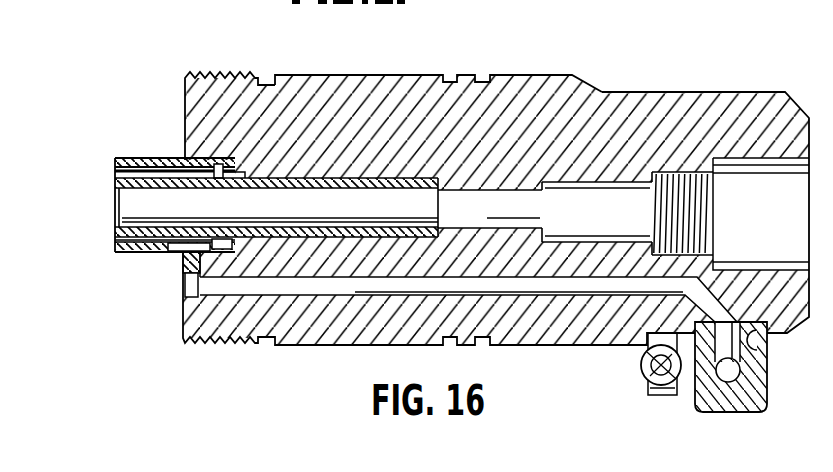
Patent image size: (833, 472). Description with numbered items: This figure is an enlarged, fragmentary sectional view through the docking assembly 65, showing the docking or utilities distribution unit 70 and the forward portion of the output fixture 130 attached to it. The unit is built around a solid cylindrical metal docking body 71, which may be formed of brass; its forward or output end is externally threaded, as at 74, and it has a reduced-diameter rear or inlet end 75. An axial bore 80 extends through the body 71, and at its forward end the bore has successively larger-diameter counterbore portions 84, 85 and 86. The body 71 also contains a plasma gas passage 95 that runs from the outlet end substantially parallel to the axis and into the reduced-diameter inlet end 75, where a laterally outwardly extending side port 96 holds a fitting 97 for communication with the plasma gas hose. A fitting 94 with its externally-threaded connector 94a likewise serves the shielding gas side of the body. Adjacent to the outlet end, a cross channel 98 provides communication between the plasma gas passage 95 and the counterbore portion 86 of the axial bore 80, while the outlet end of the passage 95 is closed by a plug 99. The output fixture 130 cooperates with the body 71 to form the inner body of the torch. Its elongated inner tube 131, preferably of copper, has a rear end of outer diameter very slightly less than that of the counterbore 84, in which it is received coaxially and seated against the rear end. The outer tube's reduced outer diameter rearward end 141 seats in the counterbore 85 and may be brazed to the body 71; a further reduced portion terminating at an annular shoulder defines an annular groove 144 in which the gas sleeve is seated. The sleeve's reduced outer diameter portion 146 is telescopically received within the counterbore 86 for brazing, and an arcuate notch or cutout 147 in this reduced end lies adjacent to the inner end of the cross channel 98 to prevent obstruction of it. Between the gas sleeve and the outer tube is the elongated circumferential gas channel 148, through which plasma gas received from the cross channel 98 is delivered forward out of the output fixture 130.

The docking assembly 65 is at (218, 391).
The docking or utilities distribution unit 70 is at (497, 179).
The docking body 71 is at (382, 74).
The externally threaded forward end 74 is at (236, 74).
The reduced-diameter rear or inlet end 75 is at (690, 92).
The axial bore 80 is at (542, 205).
The counterbore portion 84 is at (432, 190).
The counterbore portion 85 is at (243, 165).
The counterbore portion 86 is at (217, 177).
The fitting 94 is at (619, 380).
The externally-threaded connector 94a is at (640, 364).
The plasma gas passage 95 is at (372, 300).
The side port 96 is at (768, 352).
The fitting 97 is at (768, 384).
The cross channel 98 is at (185, 276).
The plug 99 is at (183, 292).
The output fixture 130 is at (231, 187).
The inner tube 131 is at (116, 219).
The reduced outer diameter rearward end 141 is at (244, 244).
The annular groove 144 is at (118, 249).
The reduced outer diameter portion 146 is at (181, 176).
The arcuate notch or cutout 147 is at (183, 258).
The circumferential gas channel 148 is at (106, 171).